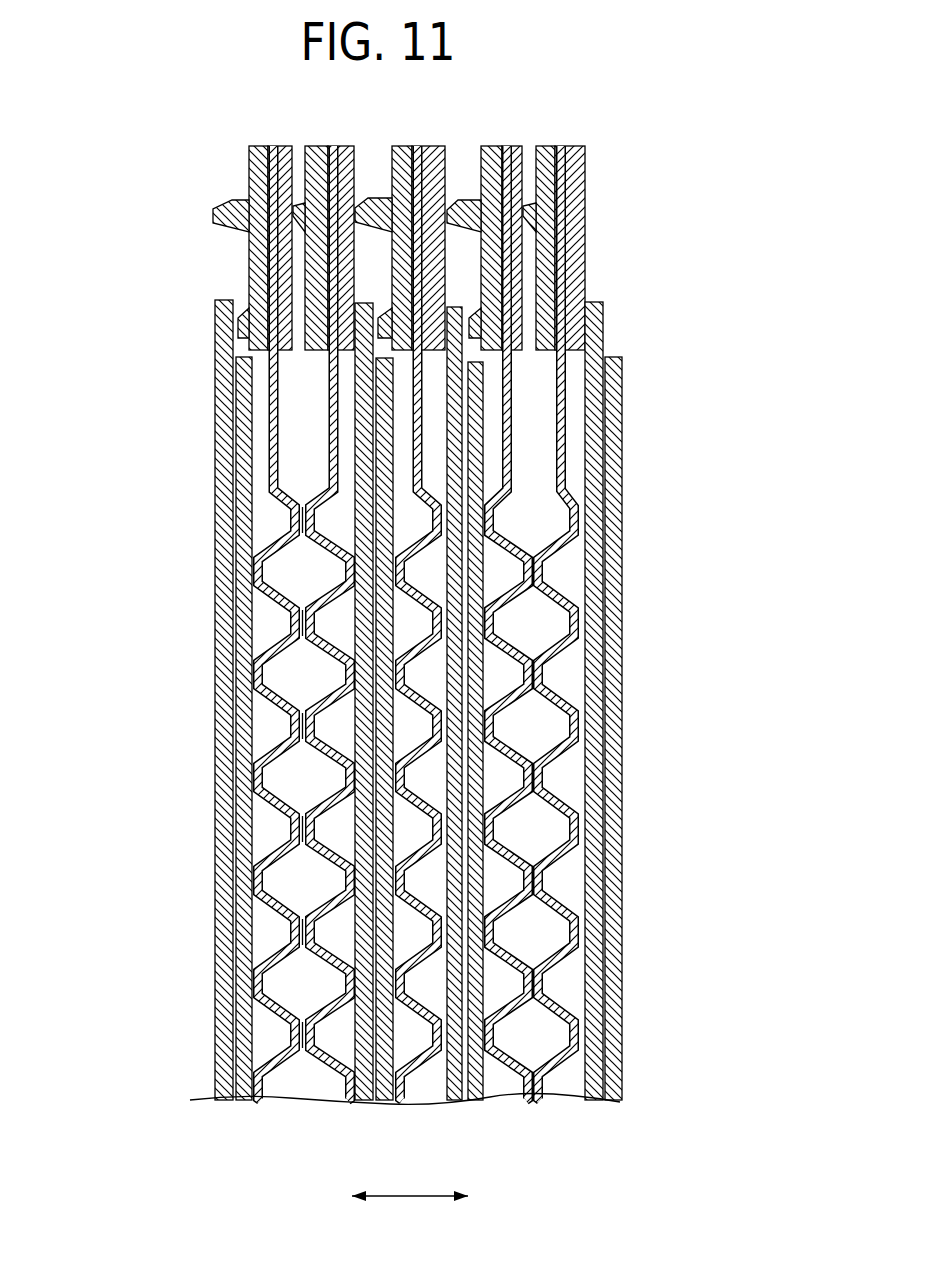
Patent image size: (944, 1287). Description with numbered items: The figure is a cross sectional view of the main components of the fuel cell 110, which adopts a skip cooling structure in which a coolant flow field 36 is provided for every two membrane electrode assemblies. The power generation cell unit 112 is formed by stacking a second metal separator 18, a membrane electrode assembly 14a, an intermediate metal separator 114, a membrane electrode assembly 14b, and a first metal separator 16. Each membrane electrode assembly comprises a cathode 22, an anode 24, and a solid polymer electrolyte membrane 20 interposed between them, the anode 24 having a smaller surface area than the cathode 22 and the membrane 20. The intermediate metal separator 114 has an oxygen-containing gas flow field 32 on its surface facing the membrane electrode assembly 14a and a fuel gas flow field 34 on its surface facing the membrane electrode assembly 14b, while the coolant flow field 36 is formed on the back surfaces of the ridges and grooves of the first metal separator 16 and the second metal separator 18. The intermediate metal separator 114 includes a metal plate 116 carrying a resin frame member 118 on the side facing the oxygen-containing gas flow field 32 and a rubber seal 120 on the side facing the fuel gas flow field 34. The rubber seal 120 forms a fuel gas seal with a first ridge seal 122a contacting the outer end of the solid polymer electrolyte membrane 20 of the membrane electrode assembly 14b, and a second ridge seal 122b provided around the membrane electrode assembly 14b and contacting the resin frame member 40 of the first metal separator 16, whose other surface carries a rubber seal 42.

The fuel cell 110 is at (610, 93).
The rubber seal 42 is at (312, 146).
The rubber seal 120 is at (388, 175).
The resin frame member 118 is at (442, 146).
The second ridge seal 122b is at (305, 163).
The resin frame member 40 is at (237, 248).
The first ridge seal 122a is at (305, 240).
The cathode 22 is at (327, 438).
The solid polymer electrolyte membrane 20 is at (327, 466).
The anode 24 is at (328, 495).
The membrane electrode assembly 14b is at (118, 400).
The metal plate 116 is at (345, 443).
The coolant flow field 36 is at (297, 572).
The oxygen-containing gas flow field 32 is at (330, 722).
The fuel gas flow field 34 is at (485, 780).
The first metal separator 16 is at (215, 775).
The power generation cell unit 112 is at (118, 935).
The intermediate metal separator 114 is at (425, 932).
The membrane electrode assembly 14a is at (497, 1008).
The second metal separator 18 is at (442, 970).